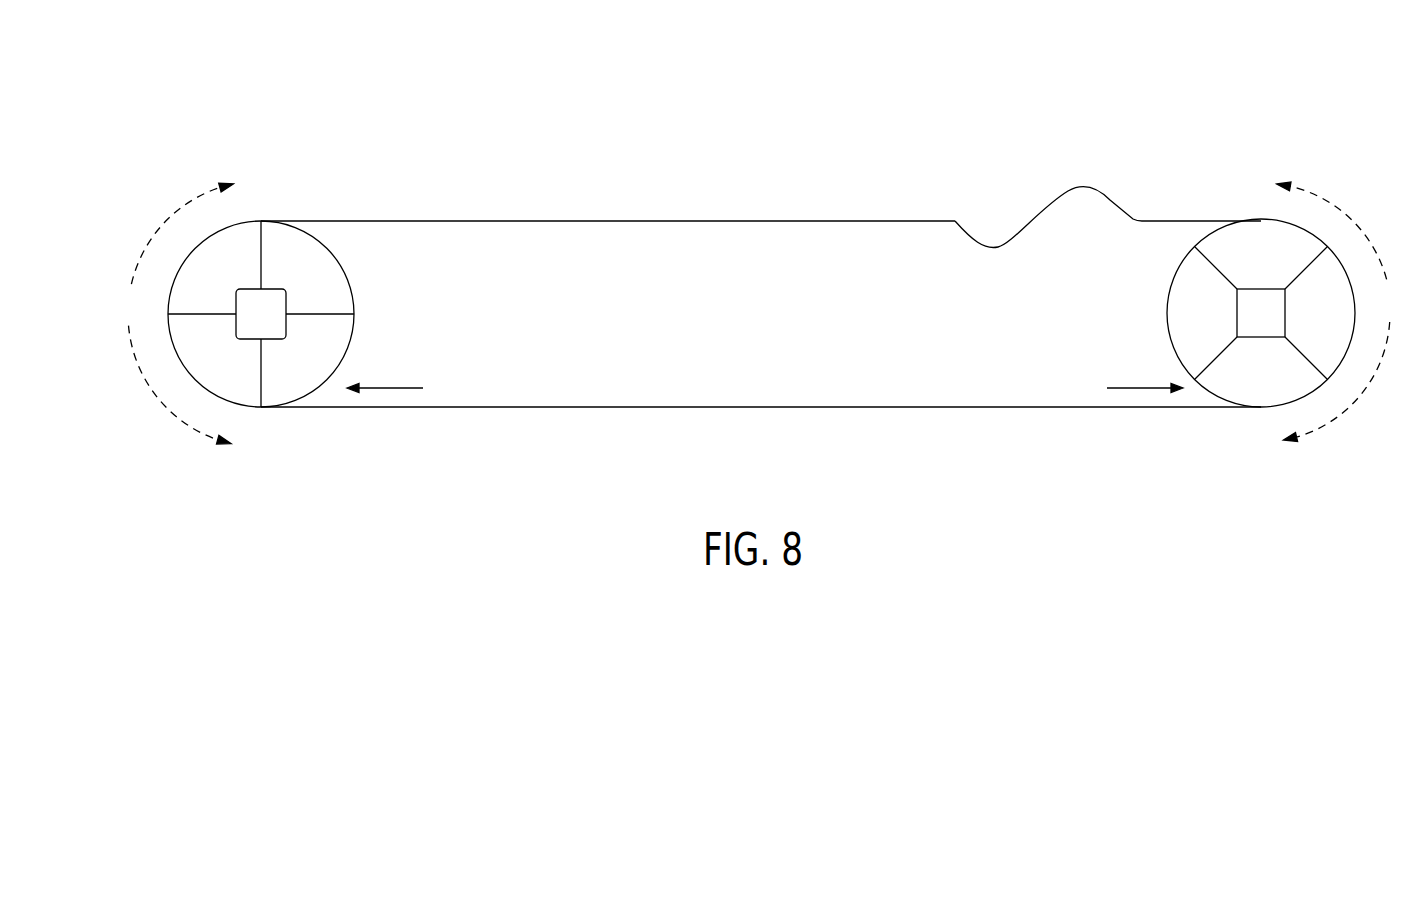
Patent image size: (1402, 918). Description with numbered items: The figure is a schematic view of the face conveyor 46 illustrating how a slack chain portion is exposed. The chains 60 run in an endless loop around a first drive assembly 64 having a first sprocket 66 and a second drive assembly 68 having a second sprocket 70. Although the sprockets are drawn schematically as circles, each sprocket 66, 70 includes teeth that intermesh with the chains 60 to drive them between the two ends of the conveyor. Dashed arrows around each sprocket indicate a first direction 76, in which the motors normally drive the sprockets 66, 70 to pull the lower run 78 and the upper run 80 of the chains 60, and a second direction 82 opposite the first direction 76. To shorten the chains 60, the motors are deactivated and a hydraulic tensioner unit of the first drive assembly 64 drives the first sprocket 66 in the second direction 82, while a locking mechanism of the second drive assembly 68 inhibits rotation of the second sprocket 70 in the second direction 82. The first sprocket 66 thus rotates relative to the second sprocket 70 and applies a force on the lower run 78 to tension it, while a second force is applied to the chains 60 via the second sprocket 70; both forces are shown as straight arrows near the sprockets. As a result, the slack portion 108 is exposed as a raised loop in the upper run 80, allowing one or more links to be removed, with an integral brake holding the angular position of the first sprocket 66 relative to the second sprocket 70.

The face conveyor 46 is at (758, 272).
The chains 60 is at (761, 299).
The first drive assembly 64 is at (1231, 359).
The first sprocket 66 is at (1165, 315).
The second drive assembly 68 is at (290, 369).
The second sprocket 70 is at (357, 303).
The first direction 76 is at (188, 203).
The lower run 78 is at (742, 408).
The upper run 80 is at (761, 190).
The second direction 82 is at (162, 407).
The slack portion 108 is at (1078, 186).